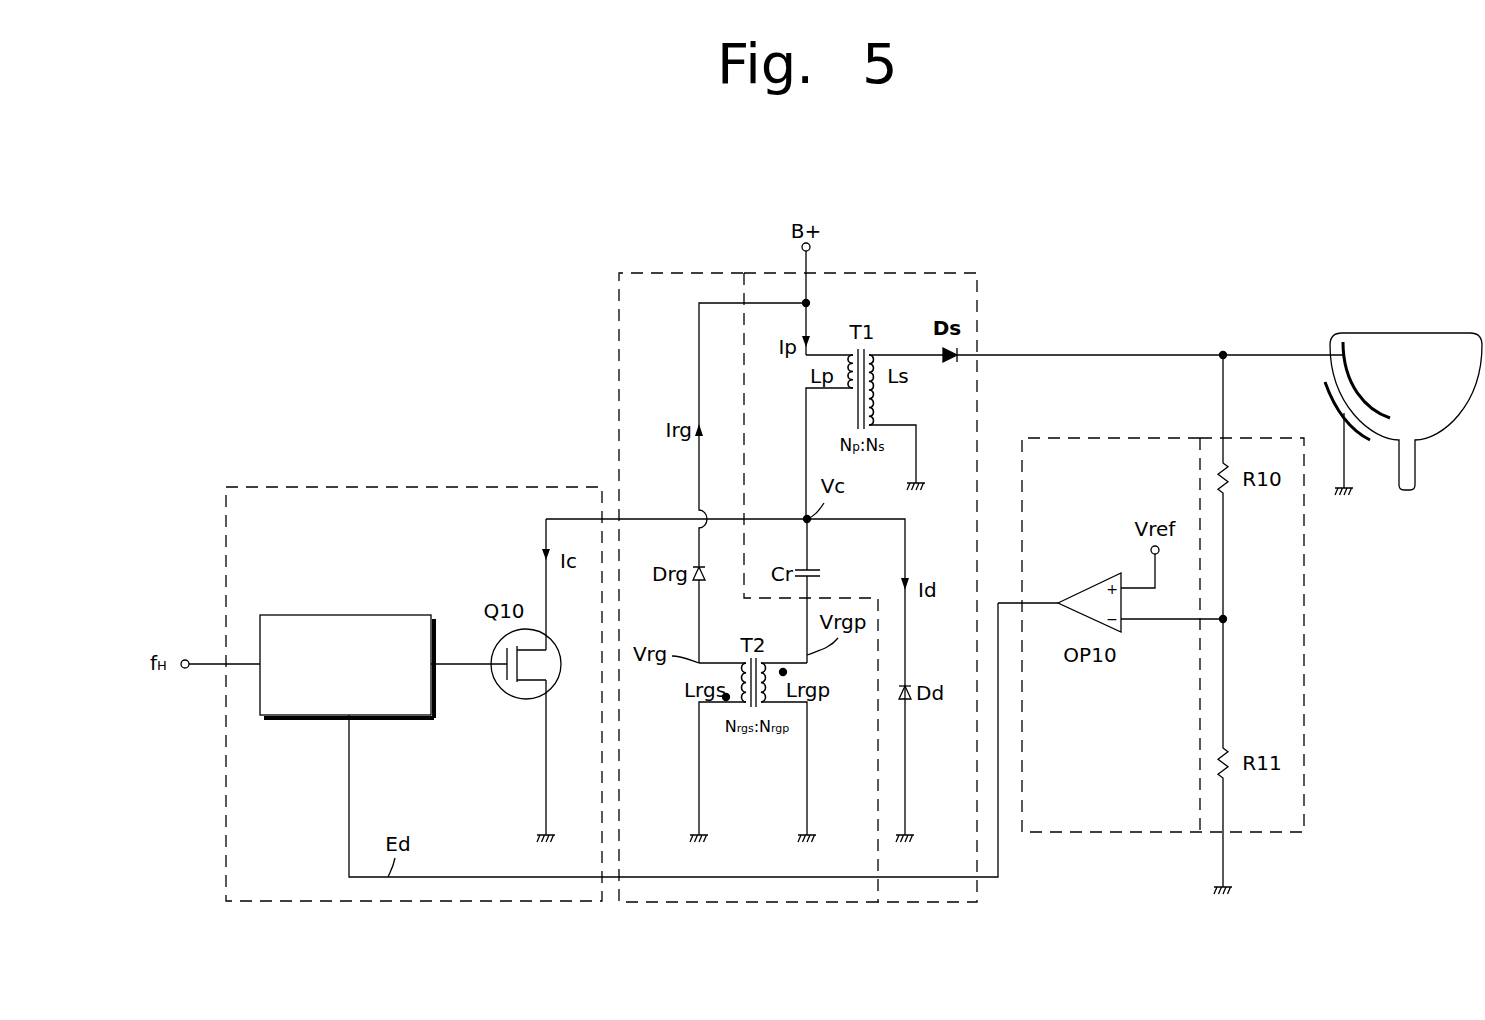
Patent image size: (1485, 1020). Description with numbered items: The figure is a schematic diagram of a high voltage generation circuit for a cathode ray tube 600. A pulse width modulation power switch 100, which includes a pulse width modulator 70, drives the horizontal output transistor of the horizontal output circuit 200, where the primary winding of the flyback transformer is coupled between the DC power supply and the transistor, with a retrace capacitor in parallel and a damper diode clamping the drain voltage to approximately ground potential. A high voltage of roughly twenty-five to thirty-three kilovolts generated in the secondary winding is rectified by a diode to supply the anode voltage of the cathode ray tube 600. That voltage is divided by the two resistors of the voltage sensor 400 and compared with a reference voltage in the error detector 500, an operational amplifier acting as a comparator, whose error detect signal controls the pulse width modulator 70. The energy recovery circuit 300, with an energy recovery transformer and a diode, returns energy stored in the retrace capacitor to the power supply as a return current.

The pulse width modulator 70 is at (368, 615).
The pulse width modulation power switch 100 is at (412, 487).
The horizontal output circuit 200 is at (925, 273).
The energy recovery circuit 300 is at (676, 273).
The voltage sensor 400 is at (1258, 438).
The error detector 500 is at (1125, 438).
The cathode ray tube 600 is at (1425, 333).